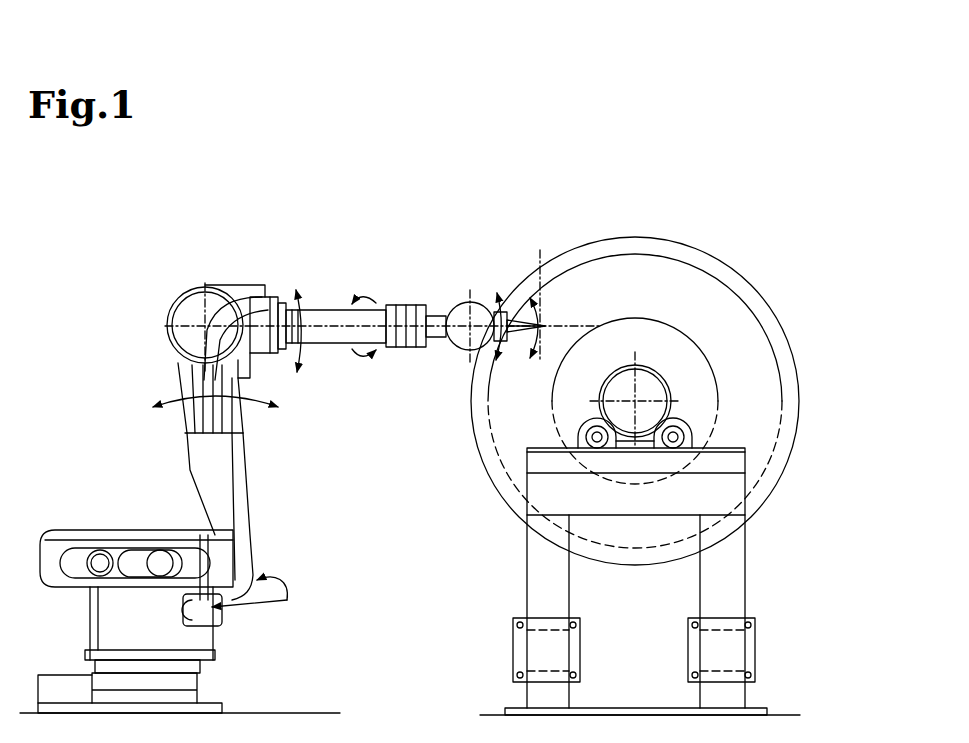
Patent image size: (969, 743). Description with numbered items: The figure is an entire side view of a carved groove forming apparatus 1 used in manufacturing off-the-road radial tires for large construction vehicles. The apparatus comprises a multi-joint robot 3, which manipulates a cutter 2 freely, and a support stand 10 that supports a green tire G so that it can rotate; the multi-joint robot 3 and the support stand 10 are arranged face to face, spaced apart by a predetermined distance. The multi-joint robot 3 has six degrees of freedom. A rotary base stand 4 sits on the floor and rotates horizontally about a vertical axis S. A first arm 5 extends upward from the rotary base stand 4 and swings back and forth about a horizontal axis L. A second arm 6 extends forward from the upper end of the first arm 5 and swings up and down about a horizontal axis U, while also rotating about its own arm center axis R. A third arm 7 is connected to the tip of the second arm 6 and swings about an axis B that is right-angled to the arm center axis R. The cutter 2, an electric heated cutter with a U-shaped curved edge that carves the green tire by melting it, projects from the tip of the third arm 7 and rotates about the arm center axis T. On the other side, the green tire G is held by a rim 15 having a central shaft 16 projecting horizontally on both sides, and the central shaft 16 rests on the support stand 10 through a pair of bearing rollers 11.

The carved groove forming apparatus 1 is at (446, 160).
The cutter 2 is at (522, 312).
The multi-joint robot 3 is at (200, 254).
The rotary base stand 4 is at (108, 610).
The first arm 5 is at (242, 478).
The second arm 6 is at (333, 345).
The third arm 7 is at (517, 318).
The support stand 10 is at (760, 548).
The bearing rollers 11 is at (692, 420).
The rim 15 is at (683, 347).
The central shaft 16 is at (664, 380).
The green tire G is at (740, 270).
The horizontal axis U is at (205, 322).
The arm center axis R is at (342, 320).
The axis B is at (466, 330).
The arm center axis T is at (535, 326).
The vertical axis S is at (242, 598).
The horizontal axis L is at (205, 565).